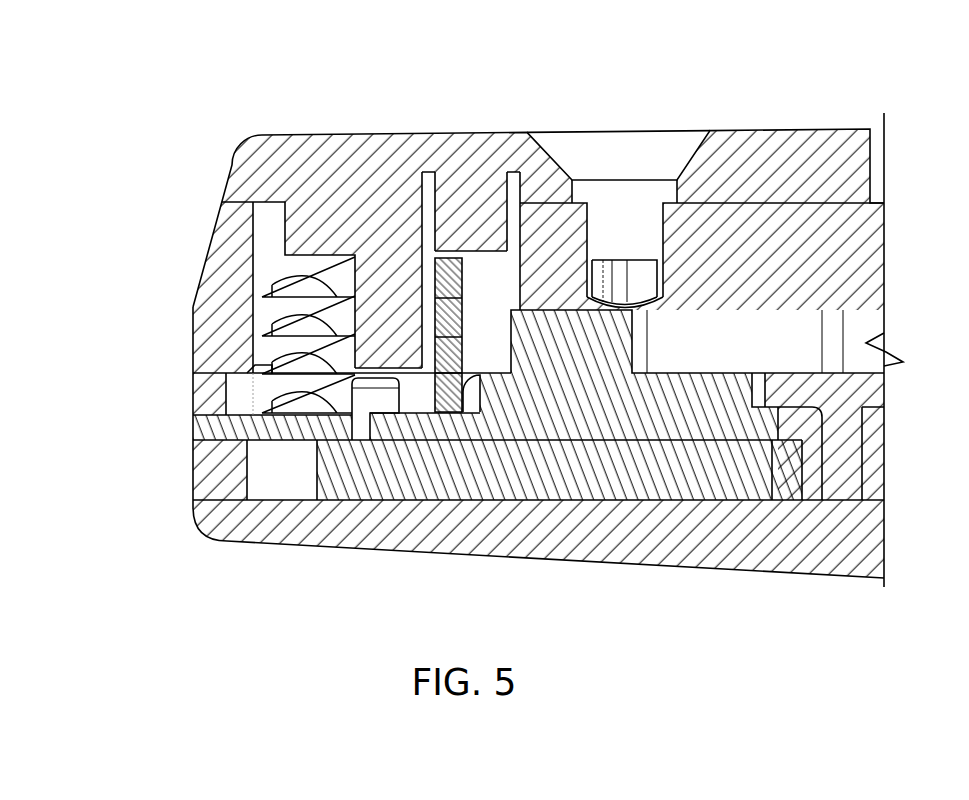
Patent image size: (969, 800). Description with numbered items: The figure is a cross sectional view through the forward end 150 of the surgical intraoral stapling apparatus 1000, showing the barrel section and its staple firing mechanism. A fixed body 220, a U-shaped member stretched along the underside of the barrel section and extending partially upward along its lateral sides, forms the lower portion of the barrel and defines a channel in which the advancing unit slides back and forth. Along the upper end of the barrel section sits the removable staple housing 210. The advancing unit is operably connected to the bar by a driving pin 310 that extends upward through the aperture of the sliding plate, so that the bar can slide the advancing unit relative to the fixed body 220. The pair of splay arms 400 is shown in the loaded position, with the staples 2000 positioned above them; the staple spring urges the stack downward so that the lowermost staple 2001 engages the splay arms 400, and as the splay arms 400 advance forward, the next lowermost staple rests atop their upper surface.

The surgical intraoral stapling apparatus 1000 is at (488, 326).
The staples 2000 is at (163, 257).
The forward end 150 is at (120, 392).
The removable staple housing 210 is at (830, 140).
The fixed body 220 is at (862, 547).
The driving pin 310 is at (867, 390).
The splay arms 400 is at (382, 398).
The lowermost staple 2001 is at (328, 393).